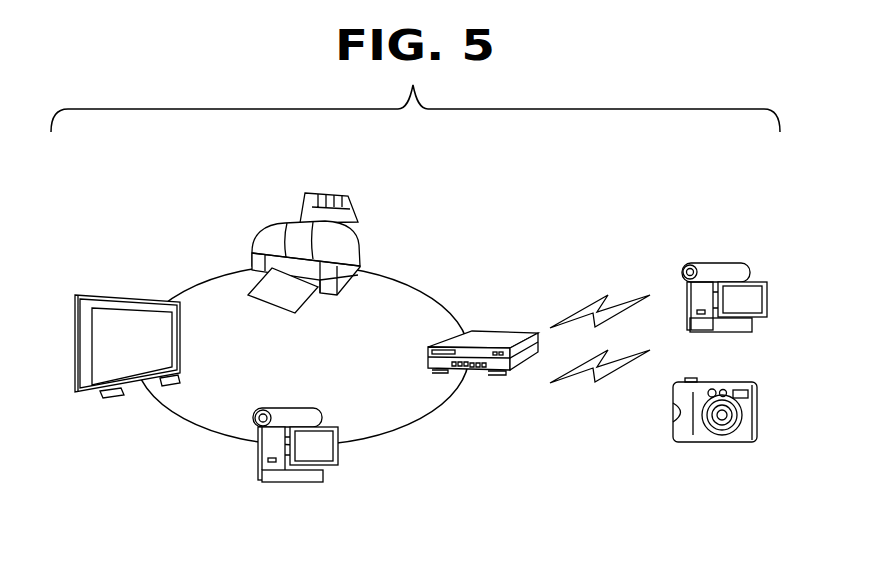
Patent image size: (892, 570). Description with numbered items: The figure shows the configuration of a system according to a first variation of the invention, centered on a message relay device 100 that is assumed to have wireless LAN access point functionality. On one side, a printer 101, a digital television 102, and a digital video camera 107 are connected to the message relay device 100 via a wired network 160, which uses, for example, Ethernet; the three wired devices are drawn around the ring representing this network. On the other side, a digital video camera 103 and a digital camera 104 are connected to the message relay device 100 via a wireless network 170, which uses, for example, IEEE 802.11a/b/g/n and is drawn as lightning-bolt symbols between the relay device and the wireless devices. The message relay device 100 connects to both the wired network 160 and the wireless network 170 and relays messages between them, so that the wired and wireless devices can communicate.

The message relay device 100 is at (518, 332).
The printer 101 is at (328, 194).
The digital television 102 is at (118, 294).
The digital video camera 103 is at (728, 263).
The digital camera 104 is at (706, 442).
The digital video camera 107 is at (297, 482).
The wired network 160 is at (428, 291).
The wireless network 170 is at (565, 384).